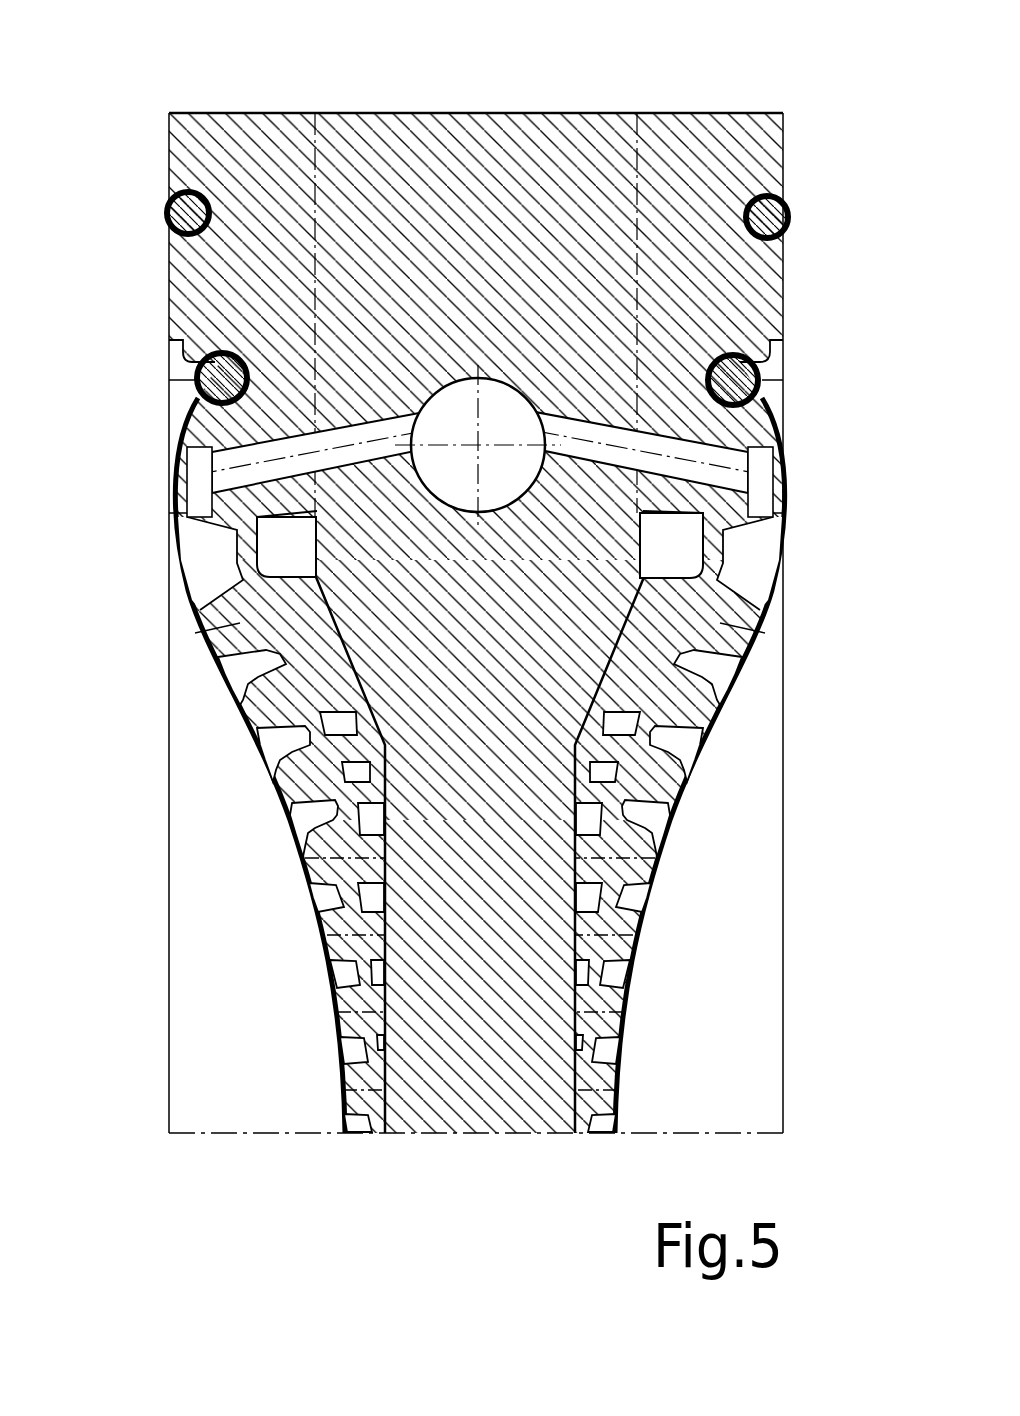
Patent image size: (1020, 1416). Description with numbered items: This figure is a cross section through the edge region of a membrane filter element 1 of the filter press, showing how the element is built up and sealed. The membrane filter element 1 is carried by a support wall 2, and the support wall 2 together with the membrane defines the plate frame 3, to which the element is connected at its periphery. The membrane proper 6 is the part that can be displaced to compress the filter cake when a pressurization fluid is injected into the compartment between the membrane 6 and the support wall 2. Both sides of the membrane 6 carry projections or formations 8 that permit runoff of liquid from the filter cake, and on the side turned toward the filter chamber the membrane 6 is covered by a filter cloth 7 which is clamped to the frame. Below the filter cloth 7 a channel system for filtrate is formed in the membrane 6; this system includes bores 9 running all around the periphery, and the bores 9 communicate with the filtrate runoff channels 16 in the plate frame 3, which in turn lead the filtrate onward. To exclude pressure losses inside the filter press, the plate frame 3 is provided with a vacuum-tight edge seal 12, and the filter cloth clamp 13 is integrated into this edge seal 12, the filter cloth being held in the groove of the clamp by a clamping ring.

The membrane filter element 1 is at (477, 112).
The support wall 2 is at (478, 1100).
The plate frame 3 is at (698, 183).
The membrane 6 is at (686, 660).
The filter cloth 7 is at (652, 905).
The projections or formations 8 is at (658, 858).
The bores 9 is at (748, 468).
The vacuum-tight edge seal 12 is at (773, 213).
The filter cloth clamp 13 is at (740, 378).
The filtrate runoff channels 16 is at (440, 405).